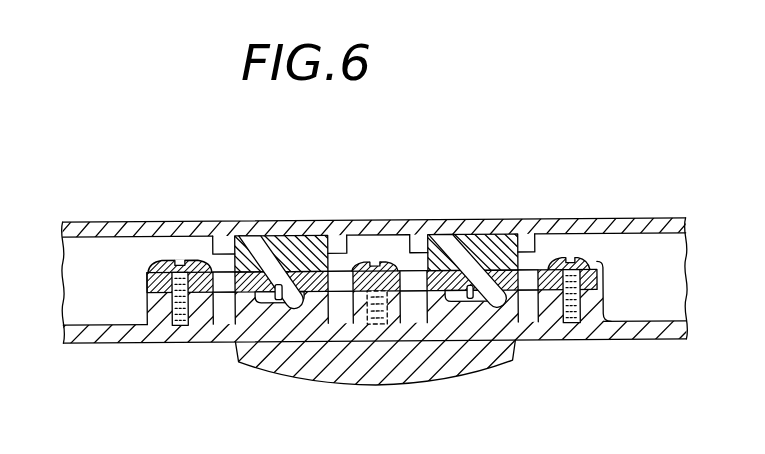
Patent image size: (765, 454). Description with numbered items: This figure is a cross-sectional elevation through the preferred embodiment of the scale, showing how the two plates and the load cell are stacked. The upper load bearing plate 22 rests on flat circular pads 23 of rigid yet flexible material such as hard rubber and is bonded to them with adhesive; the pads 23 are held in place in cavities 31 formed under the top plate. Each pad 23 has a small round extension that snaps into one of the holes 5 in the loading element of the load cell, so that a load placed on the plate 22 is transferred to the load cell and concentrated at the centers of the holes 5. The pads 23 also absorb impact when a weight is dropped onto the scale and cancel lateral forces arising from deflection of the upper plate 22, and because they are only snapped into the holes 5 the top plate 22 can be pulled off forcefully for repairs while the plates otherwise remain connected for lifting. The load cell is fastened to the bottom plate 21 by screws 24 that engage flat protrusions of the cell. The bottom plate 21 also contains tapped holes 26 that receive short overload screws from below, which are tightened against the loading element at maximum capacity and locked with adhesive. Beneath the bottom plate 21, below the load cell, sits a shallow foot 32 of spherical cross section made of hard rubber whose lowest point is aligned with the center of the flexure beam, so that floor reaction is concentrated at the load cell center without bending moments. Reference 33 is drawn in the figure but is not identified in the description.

The holes 5 is at (514, 238).
The bottom plate 21 is at (135, 333).
The upper load bearing plate 22 is at (164, 221).
The flat circular pads 23 is at (275, 237).
The screws 24 is at (156, 271).
The tapped holes 26 is at (157, 307).
The cavities 31 is at (226, 238).
The foot 32 is at (290, 367).
The pin 33 is at (265, 303).